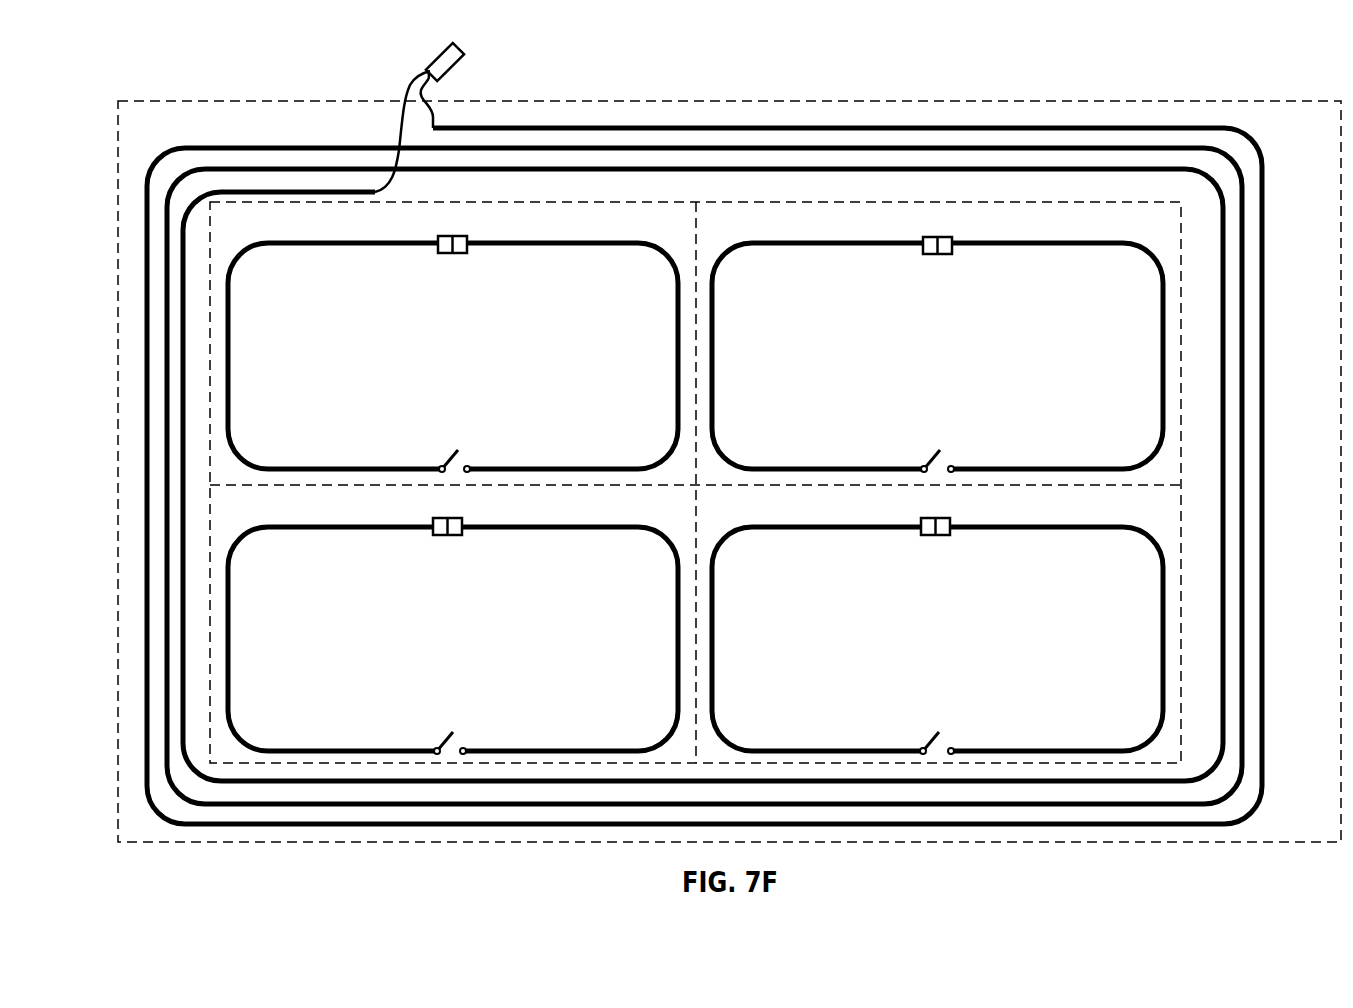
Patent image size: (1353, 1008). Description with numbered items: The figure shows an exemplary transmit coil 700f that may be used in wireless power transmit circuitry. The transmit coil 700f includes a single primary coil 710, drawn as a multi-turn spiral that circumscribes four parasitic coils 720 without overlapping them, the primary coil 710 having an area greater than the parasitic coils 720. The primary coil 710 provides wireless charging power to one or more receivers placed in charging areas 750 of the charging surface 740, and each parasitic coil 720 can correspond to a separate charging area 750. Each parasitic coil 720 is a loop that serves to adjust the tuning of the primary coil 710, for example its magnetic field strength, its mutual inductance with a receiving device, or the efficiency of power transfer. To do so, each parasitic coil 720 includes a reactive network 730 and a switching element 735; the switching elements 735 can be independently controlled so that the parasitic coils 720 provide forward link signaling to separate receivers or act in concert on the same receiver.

The transmit coil 700f is at (133, 85).
The primary coil 710 is at (1263, 170).
The parasitic coil 720 is at (548, 243).
The reactive network 730 is at (455, 236).
The switching element 735 is at (450, 453).
The charging surface 740 is at (770, 102).
The charging area 750 is at (210, 242).